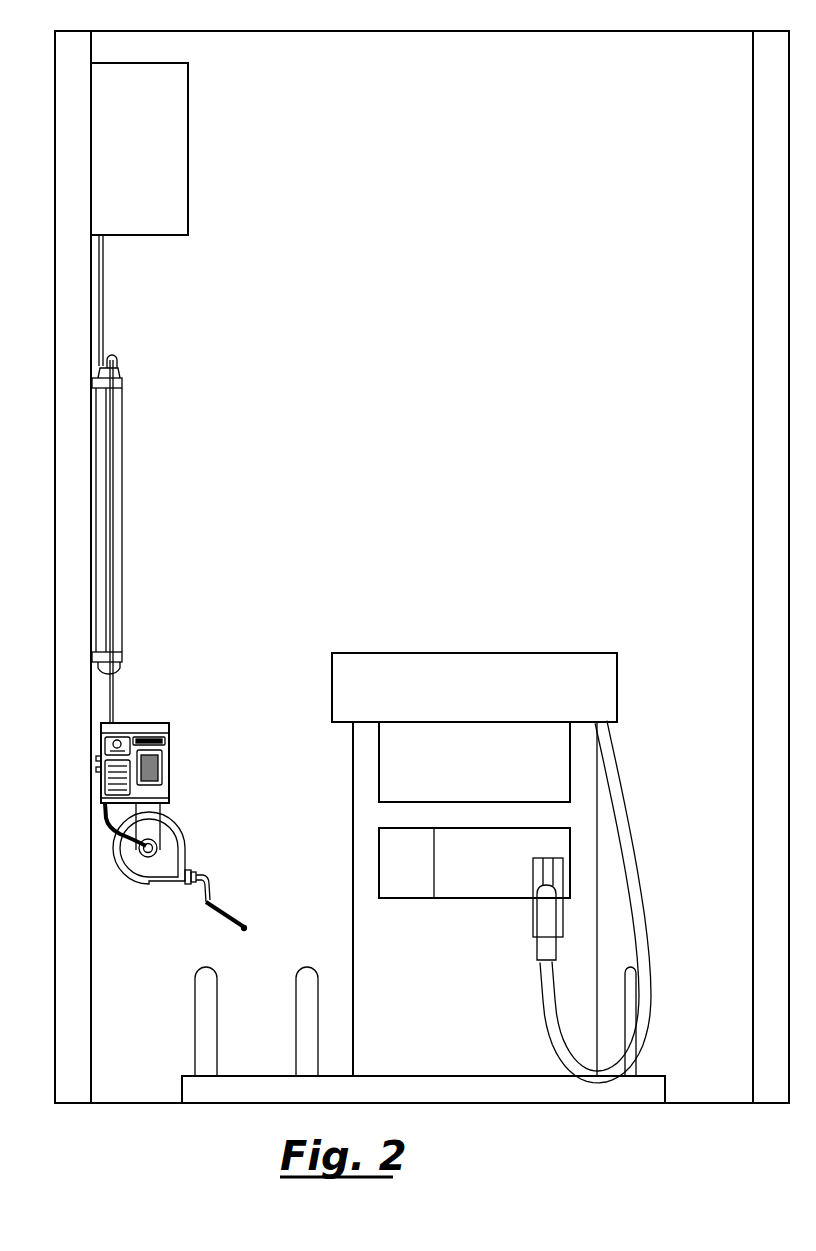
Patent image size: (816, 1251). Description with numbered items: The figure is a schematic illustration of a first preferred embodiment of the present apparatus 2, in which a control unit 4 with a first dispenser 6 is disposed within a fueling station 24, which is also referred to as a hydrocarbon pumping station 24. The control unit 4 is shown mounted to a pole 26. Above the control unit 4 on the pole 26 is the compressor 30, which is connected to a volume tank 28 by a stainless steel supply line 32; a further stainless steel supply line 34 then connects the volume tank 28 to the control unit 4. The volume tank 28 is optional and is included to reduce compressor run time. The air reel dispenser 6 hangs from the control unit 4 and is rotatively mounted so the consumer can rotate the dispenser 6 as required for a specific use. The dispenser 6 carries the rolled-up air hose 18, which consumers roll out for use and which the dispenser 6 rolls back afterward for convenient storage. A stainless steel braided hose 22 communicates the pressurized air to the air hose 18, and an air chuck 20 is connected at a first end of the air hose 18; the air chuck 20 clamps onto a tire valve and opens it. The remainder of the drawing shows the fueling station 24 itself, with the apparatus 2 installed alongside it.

The apparatus 2 is at (164, 693).
The control unit 4 is at (167, 759).
The air reel dispenser 6 is at (175, 850).
The air hose 18 is at (207, 902).
The air chuck 20 is at (228, 916).
The stainless steel braided hose 22 is at (110, 824).
The fueling station 24 is at (485, 638).
The pole 26 is at (74, 438).
The volume tank 28 is at (121, 508).
The compressor 30 is at (171, 133).
The stainless steel supply line 32 is at (104, 278).
The stainless steel supply line 34 is at (115, 424).